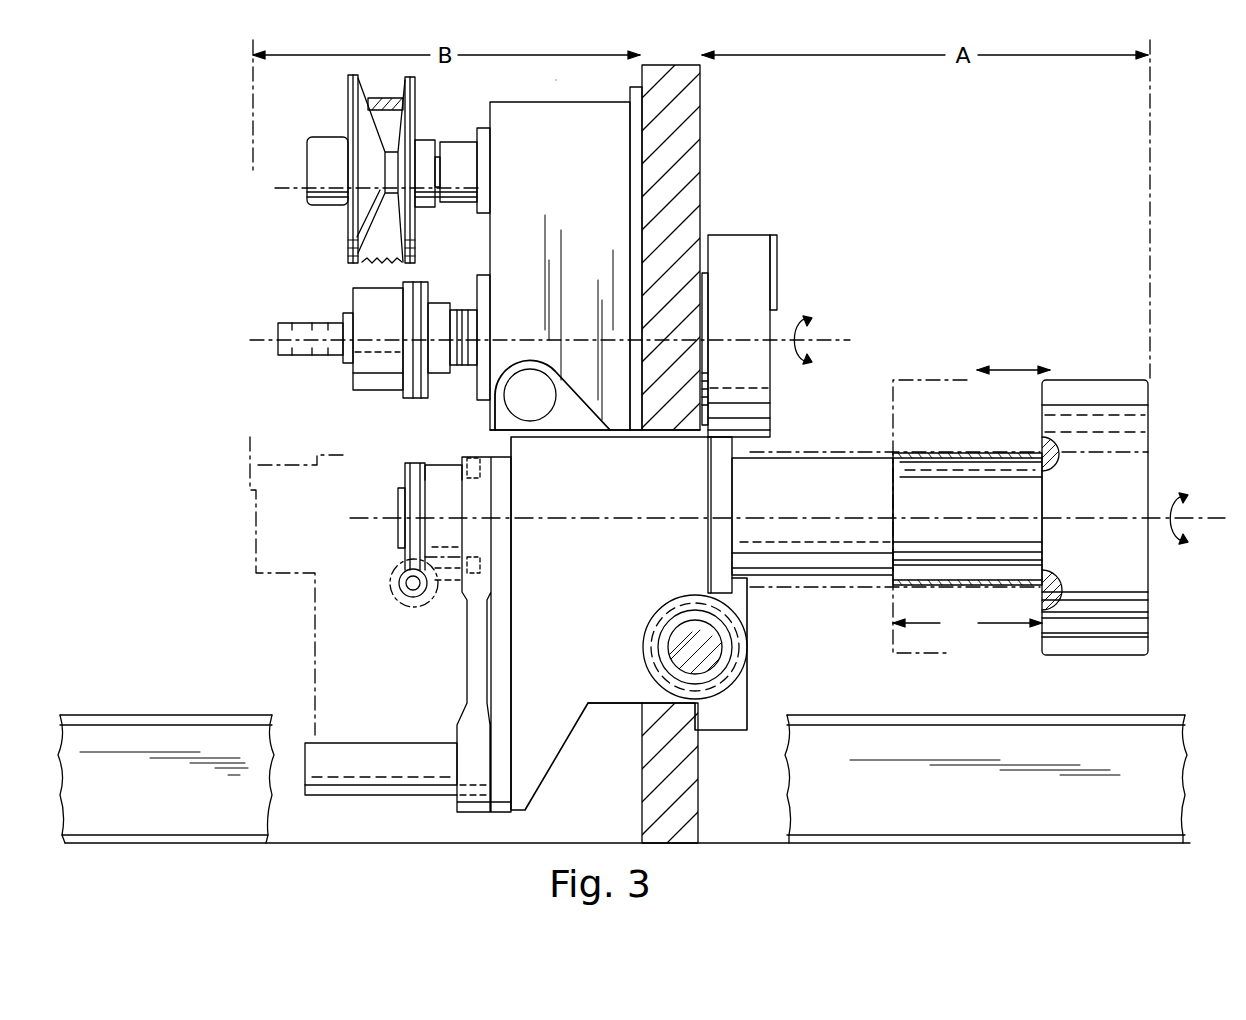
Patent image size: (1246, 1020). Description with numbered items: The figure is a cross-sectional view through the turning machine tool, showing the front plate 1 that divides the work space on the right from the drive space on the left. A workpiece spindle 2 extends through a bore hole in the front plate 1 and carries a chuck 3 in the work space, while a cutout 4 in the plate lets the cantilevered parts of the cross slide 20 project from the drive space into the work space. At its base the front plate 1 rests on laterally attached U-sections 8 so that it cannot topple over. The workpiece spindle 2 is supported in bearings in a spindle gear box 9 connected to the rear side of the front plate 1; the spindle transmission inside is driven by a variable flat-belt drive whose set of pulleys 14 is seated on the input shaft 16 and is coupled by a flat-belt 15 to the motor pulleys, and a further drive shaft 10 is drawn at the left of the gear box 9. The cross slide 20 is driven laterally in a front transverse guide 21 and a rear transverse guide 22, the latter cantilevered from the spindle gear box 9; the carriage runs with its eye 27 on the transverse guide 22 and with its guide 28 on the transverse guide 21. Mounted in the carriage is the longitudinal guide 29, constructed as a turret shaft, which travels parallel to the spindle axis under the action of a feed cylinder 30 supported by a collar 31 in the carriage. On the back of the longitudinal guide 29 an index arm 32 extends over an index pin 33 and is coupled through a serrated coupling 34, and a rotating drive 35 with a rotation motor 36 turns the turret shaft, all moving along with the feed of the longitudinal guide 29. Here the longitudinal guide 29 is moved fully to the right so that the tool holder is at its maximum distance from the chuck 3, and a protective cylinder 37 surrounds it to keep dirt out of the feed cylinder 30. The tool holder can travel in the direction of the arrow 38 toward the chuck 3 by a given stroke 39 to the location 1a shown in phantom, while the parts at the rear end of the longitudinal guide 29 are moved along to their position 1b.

The front plate 1 is at (695, 116).
The location Ia 1a is at (930, 380).
The position Ib 1b is at (250, 523).
The workpiece spindle 2 is at (465, 310).
The chuck 3 is at (745, 252).
The cutout 4 is at (652, 697).
The U-sections 8 is at (128, 740).
The spindle gear box 9 is at (558, 114).
The drive shaft 10 is at (366, 310).
The set of pulleys 14 is at (355, 232).
The flat-belt 15 is at (388, 98).
The input shaft 16 is at (313, 187).
The cross slide 20 is at (563, 752).
The transverse guide 21 is at (710, 655).
The transverse guide 22 is at (520, 400).
The eye 27 is at (513, 420).
The guide 28 is at (717, 630).
The longitudinal guide 29 is at (930, 488).
The feed cylinder 30 is at (833, 478).
The collar 31 is at (722, 487).
The index arm 32 is at (465, 654).
The index pin 33 is at (368, 758).
The pin 34 is at (462, 455).
The rotating drive 35 is at (412, 485).
The rotation motor 36 is at (398, 598).
The protective cylinder 37 is at (1003, 453).
The arrow 38 is at (1013, 368).
The stroke 39 is at (967, 623).